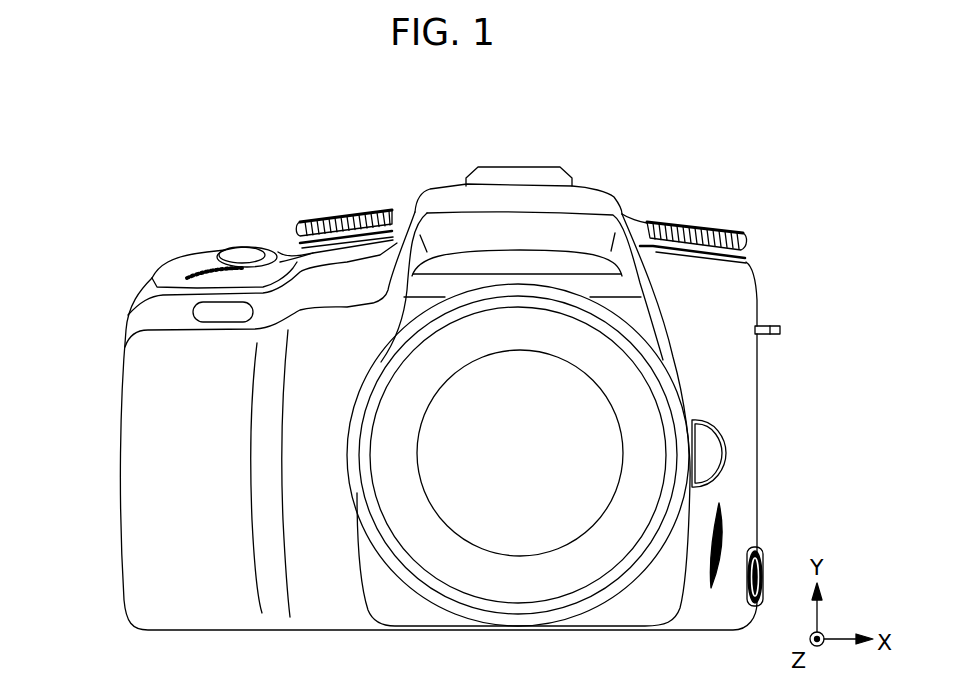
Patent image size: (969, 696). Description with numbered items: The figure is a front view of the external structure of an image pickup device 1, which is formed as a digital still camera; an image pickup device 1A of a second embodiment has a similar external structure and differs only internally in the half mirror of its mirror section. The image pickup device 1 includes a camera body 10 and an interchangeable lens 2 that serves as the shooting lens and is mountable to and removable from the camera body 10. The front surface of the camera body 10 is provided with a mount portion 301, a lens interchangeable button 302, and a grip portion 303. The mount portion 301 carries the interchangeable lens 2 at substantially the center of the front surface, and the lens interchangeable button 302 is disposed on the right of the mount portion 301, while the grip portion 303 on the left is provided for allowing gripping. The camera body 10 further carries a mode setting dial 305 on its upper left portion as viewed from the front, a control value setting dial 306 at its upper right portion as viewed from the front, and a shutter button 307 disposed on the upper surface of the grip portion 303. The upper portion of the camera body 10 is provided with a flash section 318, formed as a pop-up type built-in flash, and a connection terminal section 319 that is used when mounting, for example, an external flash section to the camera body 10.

The image pickup device 1 is at (441, 107).
The image pickup device 1A is at (489, 107).
The camera body 10 is at (150, 248).
The interchangeable lens 2 is at (608, 463).
The mount portion 301 is at (619, 607).
The lens interchangeable button 302 is at (708, 453).
The grip portion 303 is at (150, 498).
The mode setting dial 305 is at (342, 215).
The control value setting dial 306 is at (694, 221).
The shutter button 307 is at (238, 252).
The flash section 318 is at (417, 182).
The connection terminal section 319 is at (525, 175).